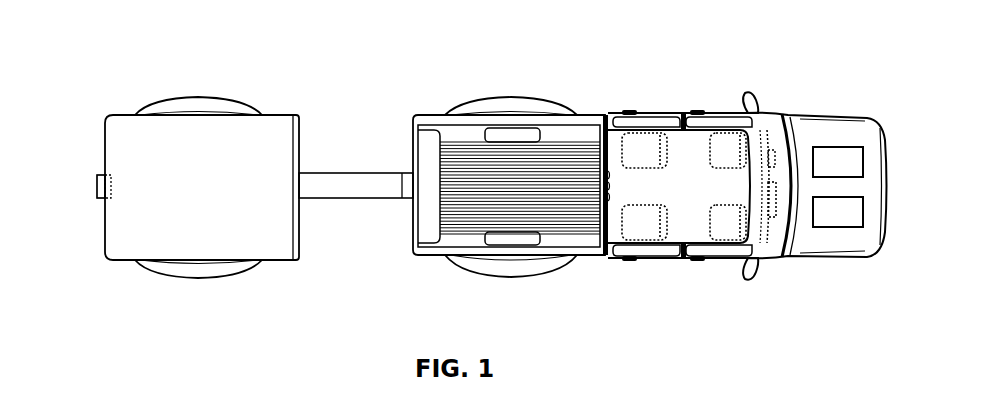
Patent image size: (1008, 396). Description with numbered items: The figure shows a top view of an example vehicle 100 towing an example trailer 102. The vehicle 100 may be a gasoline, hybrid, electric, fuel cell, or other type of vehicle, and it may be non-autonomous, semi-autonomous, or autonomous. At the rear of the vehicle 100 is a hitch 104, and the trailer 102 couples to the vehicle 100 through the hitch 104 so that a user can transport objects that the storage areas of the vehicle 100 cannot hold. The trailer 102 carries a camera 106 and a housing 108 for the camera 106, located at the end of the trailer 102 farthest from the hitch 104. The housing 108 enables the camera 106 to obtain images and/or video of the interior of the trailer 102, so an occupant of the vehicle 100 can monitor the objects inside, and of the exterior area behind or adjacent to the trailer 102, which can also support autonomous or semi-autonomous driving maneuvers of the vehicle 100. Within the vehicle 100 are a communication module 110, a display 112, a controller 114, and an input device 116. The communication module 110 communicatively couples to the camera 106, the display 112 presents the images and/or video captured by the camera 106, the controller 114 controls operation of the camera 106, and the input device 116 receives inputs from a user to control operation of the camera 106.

The vehicle 100 is at (774, 55).
The trailer 102 is at (264, 76).
The hitch 104 is at (405, 200).
The camera 106 is at (101, 200).
The housing 108 is at (96, 183).
The communication module 110 is at (838, 162).
The display 112 is at (777, 204).
The controller 114 is at (838, 212).
The input device 116 is at (777, 165).